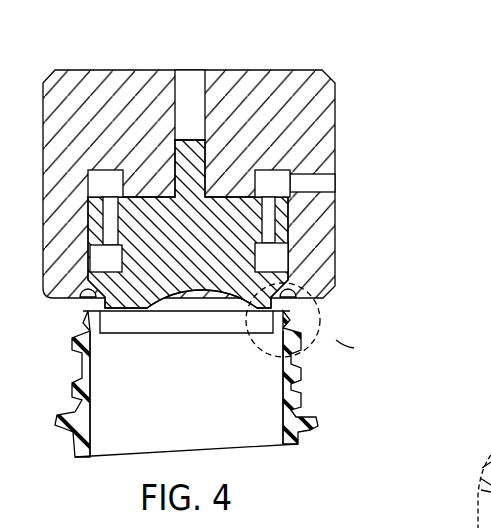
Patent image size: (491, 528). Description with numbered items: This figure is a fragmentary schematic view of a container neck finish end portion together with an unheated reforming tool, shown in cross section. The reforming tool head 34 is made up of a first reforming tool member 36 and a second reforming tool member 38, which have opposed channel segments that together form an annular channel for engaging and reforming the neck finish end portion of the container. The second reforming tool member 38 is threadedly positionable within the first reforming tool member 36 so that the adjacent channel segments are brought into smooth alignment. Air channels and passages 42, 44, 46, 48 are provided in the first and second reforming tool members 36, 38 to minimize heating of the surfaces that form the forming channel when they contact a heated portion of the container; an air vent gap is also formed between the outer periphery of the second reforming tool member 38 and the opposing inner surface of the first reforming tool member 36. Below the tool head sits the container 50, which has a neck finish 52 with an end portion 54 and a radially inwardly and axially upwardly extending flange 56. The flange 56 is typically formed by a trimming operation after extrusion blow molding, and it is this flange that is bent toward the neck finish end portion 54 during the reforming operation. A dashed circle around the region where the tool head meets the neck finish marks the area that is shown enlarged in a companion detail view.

The reforming tool head 34 is at (239, 237).
The first reforming tool member 36 is at (311, 80).
The second reforming tool member 38 is at (186, 291).
The air channel 42 is at (273, 261).
The air channel 44 is at (265, 227).
The air channel 46 is at (270, 192).
The air passage 48 is at (322, 183).
The container 50 is at (165, 385).
The neck finish 52 is at (82, 370).
The neck finish end portion 54 is at (322, 309).
The flange 56 is at (273, 318).